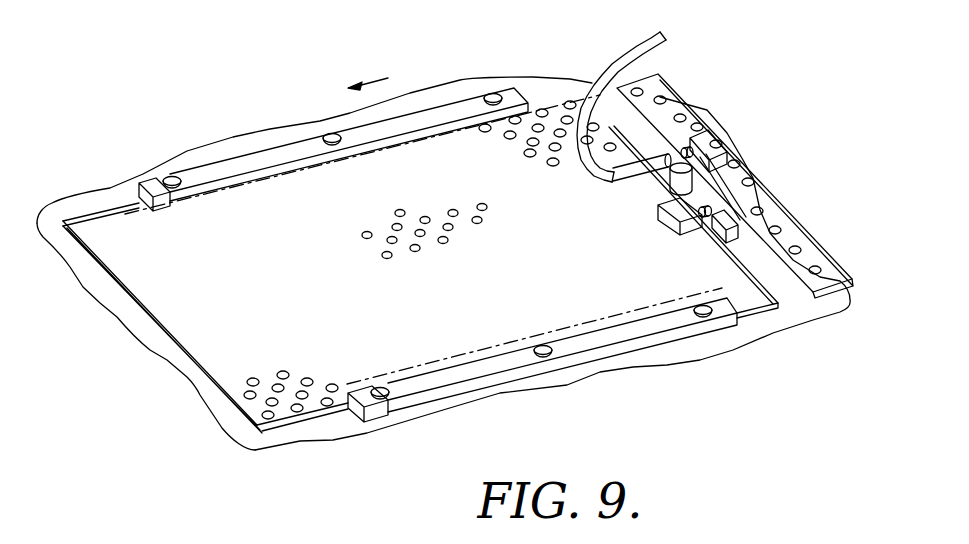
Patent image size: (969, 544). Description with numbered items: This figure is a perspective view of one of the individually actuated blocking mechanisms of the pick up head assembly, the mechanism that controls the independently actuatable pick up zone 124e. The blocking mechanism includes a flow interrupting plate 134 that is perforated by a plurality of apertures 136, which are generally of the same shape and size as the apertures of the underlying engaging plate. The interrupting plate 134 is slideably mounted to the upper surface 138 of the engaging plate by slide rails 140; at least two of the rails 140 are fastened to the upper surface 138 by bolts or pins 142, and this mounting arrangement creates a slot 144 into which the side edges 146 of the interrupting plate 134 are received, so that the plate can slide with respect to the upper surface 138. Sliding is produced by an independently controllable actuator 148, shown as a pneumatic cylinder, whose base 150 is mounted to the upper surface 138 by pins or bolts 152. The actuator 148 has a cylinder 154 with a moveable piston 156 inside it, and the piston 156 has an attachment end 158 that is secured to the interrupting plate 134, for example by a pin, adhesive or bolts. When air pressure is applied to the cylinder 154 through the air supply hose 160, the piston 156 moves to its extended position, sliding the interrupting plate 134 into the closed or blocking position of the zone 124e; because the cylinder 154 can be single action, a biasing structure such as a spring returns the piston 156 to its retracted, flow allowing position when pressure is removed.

The pick up zone 124e is at (665, 370).
The flow interrupting plate 134 is at (160, 328).
The apertures 136 is at (388, 256).
The upper surface of the engaging plate 138 is at (240, 433).
The slide rails 140 is at (257, 160).
The bolts or pins 142 is at (545, 357).
The slot 144 is at (148, 203).
The side edges 146 is at (550, 103).
The actuator 148 is at (708, 116).
The base 150 is at (636, 138).
The pins or bolts 152 is at (745, 160).
The cylinder 154 is at (622, 182).
The piston 156 is at (700, 153).
The attachment end 158 is at (707, 143).
The air supply hose 160 is at (628, 52).